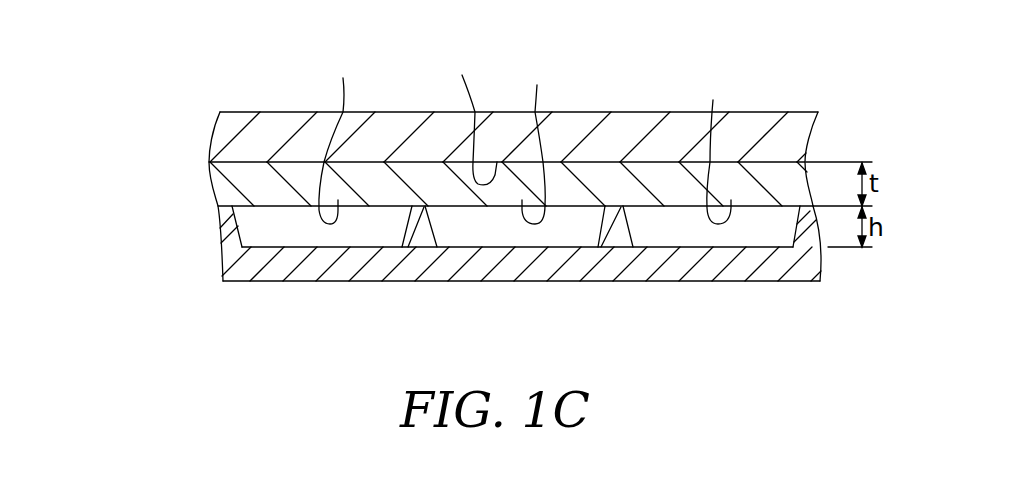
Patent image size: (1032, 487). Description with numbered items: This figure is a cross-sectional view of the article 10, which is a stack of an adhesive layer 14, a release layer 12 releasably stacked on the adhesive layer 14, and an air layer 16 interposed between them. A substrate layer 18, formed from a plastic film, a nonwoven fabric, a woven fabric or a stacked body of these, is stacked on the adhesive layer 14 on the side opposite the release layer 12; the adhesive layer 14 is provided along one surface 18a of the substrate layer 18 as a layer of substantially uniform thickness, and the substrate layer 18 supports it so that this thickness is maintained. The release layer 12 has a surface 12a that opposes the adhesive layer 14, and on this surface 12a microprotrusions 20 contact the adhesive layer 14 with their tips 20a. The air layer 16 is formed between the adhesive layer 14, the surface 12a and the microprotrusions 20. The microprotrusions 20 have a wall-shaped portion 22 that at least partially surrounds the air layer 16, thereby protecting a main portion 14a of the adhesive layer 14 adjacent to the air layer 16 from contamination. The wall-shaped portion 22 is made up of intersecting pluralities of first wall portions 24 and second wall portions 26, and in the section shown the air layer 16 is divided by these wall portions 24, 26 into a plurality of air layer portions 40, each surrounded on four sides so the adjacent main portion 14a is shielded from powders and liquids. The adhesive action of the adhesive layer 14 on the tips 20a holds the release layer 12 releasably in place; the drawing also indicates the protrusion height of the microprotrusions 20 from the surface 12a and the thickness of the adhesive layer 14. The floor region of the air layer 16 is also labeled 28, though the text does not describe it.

The article 10 is at (652, 58).
The release layer 12 is at (277, 292).
The surface 12a is at (678, 247).
The adhesive layer 14 is at (206, 181).
The main portion 14a is at (526, 137).
The air layer 16 is at (460, 232).
The substrate layer 18 is at (276, 109).
The one surface 18a is at (465, 115).
The microprotrusions 20 is at (592, 224).
The tips 20a is at (611, 206).
The wall-shaped portion 22 is at (397, 233).
The first wall portions 24 is at (218, 218).
The second wall portions 26 is at (250, 228).
The cavity floor 28 is at (517, 232).
The air layer portions 40 is at (298, 236).